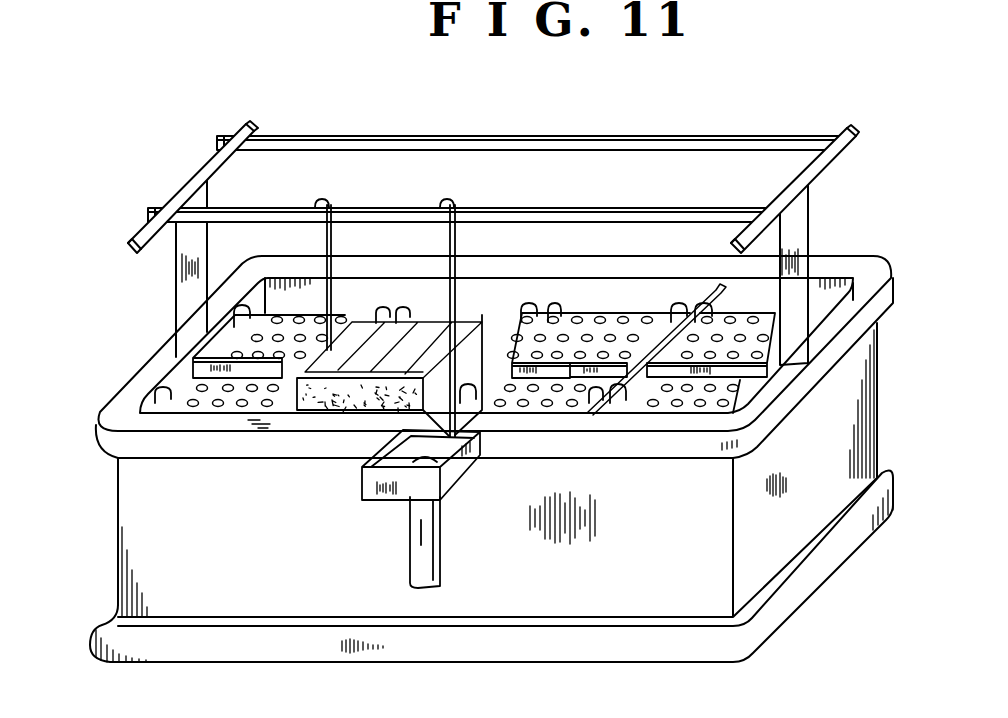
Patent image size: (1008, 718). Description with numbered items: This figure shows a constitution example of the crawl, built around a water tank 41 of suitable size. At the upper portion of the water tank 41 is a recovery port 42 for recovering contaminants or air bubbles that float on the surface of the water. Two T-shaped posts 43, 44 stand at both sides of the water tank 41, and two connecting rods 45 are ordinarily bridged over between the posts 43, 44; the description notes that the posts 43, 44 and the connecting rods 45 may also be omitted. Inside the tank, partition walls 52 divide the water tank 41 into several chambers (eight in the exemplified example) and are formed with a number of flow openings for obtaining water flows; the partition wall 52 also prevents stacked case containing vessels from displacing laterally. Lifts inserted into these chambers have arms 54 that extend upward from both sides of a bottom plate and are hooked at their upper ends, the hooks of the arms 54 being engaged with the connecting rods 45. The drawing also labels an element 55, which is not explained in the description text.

The water tank 41 is at (123, 482).
The recovery port 42 is at (362, 490).
The T-shaped post 43 is at (177, 270).
The T-shaped post 44 is at (802, 226).
The connecting rod 45 is at (673, 207).
The partition wall 52 is at (193, 364).
The arm 54 is at (450, 248).
The perforated tray 55 is at (585, 305).